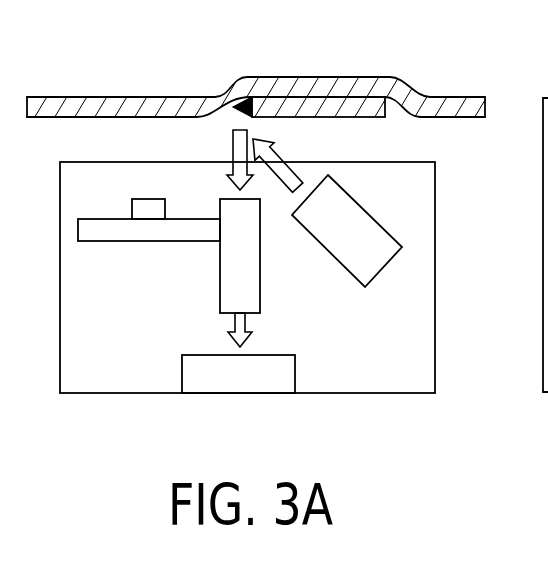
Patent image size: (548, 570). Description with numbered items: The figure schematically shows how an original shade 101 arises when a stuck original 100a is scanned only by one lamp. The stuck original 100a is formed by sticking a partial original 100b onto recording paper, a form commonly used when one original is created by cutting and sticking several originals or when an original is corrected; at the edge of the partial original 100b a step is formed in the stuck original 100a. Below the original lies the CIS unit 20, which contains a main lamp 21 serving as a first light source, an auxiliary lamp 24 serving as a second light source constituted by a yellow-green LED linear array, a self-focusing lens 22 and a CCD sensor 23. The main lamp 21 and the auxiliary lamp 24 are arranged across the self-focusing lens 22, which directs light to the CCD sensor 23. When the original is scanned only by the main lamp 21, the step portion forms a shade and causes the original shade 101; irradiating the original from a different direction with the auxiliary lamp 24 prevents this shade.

The stuck original 100a is at (355, 77).
The partial original 100b is at (362, 118).
The original shade 101 is at (233, 110).
The CIS unit 20 is at (435, 328).
The main lamp 21 is at (367, 208).
The self-focusing lens 22 is at (260, 273).
The CCD sensor 23 is at (296, 373).
The auxiliary lamp 24 is at (153, 198).